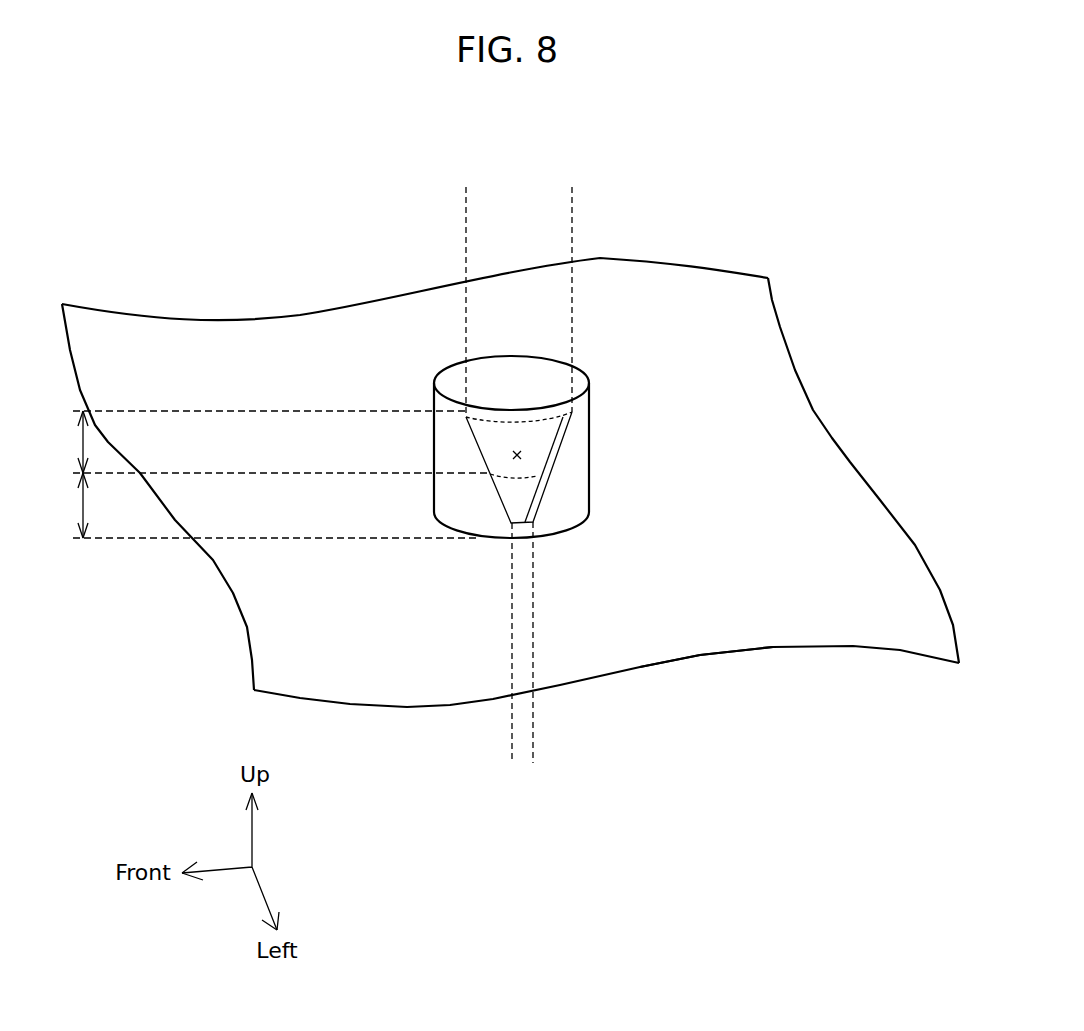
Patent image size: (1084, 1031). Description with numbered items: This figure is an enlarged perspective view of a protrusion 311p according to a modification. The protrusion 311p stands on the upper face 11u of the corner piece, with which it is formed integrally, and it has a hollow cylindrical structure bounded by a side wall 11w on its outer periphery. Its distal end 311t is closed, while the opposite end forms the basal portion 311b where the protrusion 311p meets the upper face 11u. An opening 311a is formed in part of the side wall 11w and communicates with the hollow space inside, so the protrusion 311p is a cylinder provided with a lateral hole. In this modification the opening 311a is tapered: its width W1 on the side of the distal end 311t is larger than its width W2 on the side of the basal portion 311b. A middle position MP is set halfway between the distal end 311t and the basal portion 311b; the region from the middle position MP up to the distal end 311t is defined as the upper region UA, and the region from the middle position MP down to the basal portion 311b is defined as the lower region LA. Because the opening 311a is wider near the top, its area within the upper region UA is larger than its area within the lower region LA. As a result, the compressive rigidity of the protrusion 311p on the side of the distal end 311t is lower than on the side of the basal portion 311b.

The protrusion 311p is at (598, 337).
The side wall 11w is at (433, 403).
The distal end 311t is at (502, 380).
The basal portion 311b is at (555, 535).
The opening 311a is at (520, 455).
The upper face 11u is at (712, 543).
The width W1 is at (572, 195).
The width W2 is at (563, 753).
The upper region UA is at (83, 412).
The middle position MP is at (83, 473).
The lower region LA is at (85, 505).